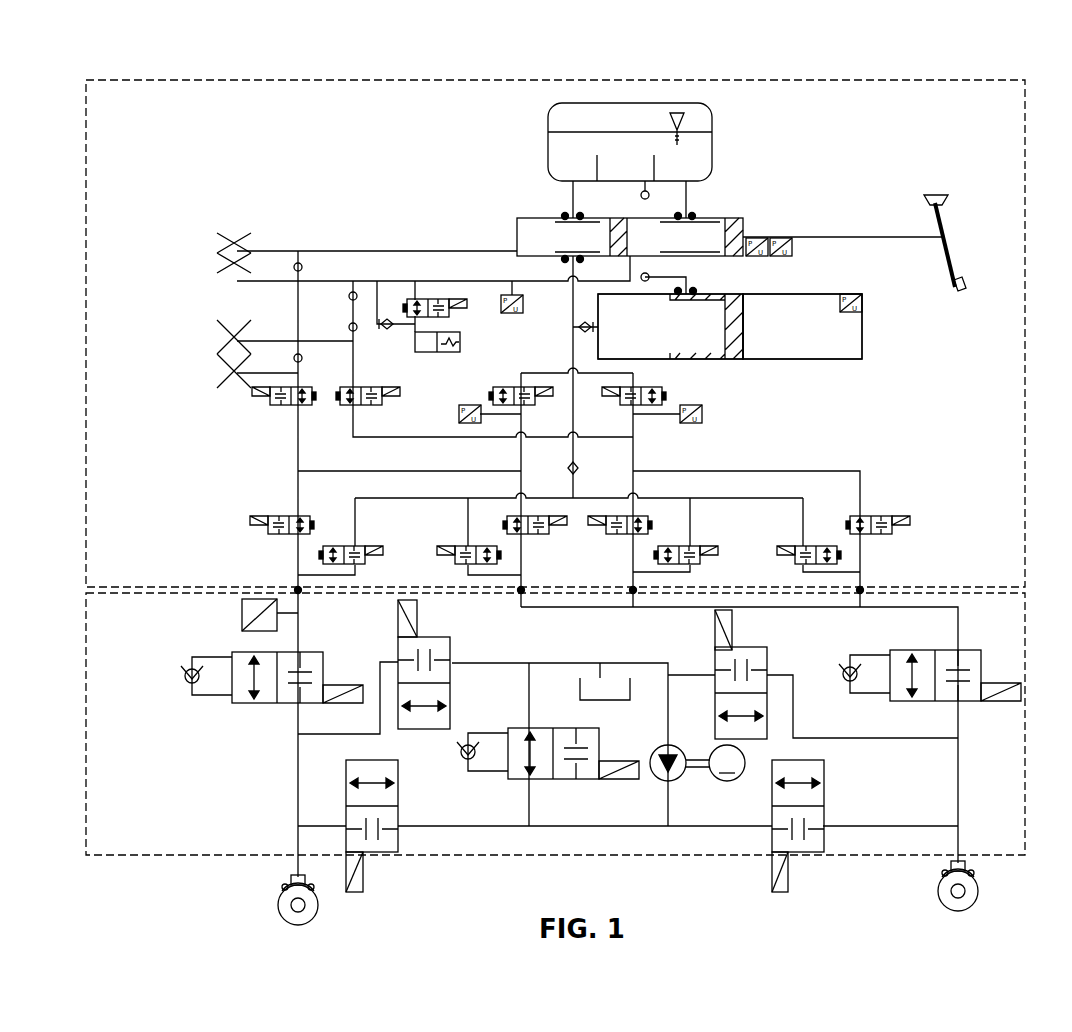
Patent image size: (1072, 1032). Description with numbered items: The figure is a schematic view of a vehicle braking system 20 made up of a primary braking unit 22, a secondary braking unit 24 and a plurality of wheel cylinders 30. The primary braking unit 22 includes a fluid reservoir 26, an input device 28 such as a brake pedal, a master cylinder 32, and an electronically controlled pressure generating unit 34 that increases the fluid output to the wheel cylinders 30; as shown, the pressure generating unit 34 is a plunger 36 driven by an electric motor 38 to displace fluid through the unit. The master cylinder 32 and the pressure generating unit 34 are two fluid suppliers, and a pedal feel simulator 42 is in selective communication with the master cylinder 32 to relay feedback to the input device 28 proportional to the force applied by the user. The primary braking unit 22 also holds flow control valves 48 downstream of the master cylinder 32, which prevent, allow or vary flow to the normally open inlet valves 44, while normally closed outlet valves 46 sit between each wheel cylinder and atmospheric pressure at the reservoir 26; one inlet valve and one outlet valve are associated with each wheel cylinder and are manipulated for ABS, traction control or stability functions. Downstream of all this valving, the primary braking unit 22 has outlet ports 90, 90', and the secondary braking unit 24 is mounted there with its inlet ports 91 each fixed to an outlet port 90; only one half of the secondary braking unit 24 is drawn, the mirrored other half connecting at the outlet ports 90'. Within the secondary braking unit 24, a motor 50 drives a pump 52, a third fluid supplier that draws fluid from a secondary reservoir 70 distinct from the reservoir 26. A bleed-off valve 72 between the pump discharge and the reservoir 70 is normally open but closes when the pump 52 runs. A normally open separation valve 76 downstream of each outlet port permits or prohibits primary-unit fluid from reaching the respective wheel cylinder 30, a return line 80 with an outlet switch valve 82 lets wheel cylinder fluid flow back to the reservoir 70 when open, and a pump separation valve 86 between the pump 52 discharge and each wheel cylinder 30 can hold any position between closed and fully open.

The vehicle braking system 20 is at (104, 50).
The primary braking unit 22 is at (400, 80).
The secondary braking unit 24 is at (516, 858).
The fluid reservoir 26 is at (722, 103).
The input device 28 is at (940, 213).
The wheel cylinders 30 is at (318, 888).
The master cylinder 32 is at (516, 232).
The electronically controlled pressure generating unit 34 is at (872, 338).
The plunger 36 is at (706, 360).
The electric motor 38 is at (817, 360).
The pedal feel simulator 42 is at (437, 352).
The inlet valves 44 is at (250, 523).
The outlet valves 46 is at (374, 546).
The flow control valves 48 is at (252, 403).
The motor 50 is at (713, 781).
The pump 52 is at (680, 781).
The secondary reservoir 70 is at (607, 701).
The bleed-off valve 72 is at (568, 781).
The separation valve 76 is at (265, 703).
The return line 80 is at (336, 735).
The outlet switch valve 82 is at (452, 698).
The pump separation valve 86 is at (398, 800).
The outlet ports 90 is at (410, 608).
The inlet ports 91 is at (300, 594).
The outlet ports 90' is at (770, 618).